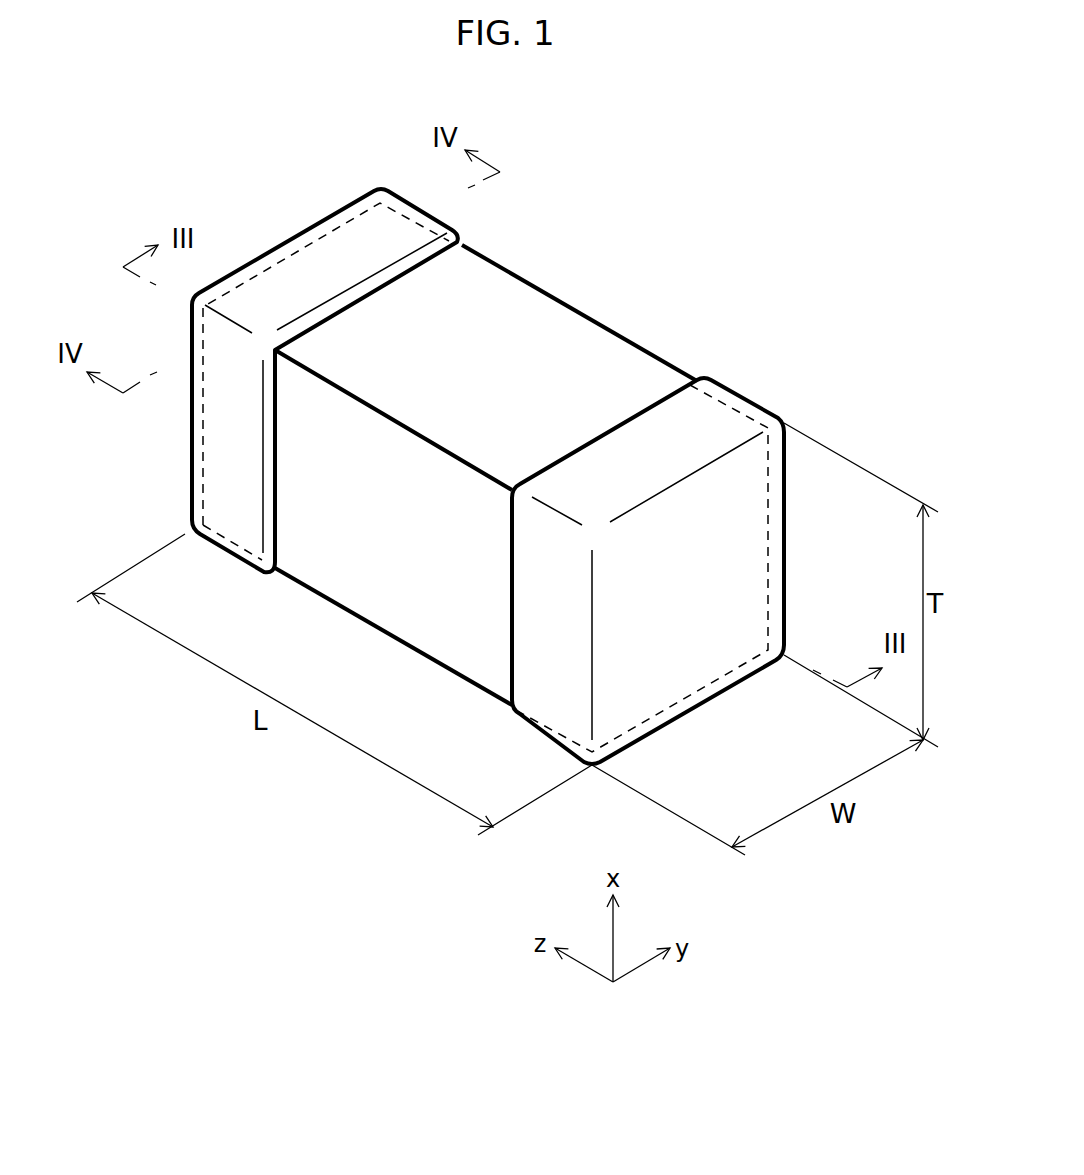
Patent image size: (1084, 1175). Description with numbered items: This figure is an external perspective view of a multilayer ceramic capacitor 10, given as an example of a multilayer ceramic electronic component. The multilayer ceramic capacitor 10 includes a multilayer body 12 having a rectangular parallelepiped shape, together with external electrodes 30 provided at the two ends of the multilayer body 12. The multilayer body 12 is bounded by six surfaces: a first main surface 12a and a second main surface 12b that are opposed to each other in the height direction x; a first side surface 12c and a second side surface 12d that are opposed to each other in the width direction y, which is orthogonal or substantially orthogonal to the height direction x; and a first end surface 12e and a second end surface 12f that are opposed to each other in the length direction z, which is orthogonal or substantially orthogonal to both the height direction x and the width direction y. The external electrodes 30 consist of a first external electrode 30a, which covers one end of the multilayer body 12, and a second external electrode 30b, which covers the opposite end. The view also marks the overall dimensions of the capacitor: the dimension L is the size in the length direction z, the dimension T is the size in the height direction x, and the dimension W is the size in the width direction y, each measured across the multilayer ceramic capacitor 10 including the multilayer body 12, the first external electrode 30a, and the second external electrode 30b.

The multilayer ceramic capacitor 10 is at (256, 108).
The multilayer body 12 is at (630, 343).
The first main surface 12a is at (573, 343).
The second main surface 12b is at (358, 603).
The first side surface 12c is at (430, 623).
The second side surface 12d is at (525, 317).
The first end surface 12e is at (307, 263).
The second end surface 12f is at (737, 530).
The external electrodes 30 is at (315, 900).
The first external electrode 30a is at (403, 194).
The second external electrode 30b is at (742, 391).